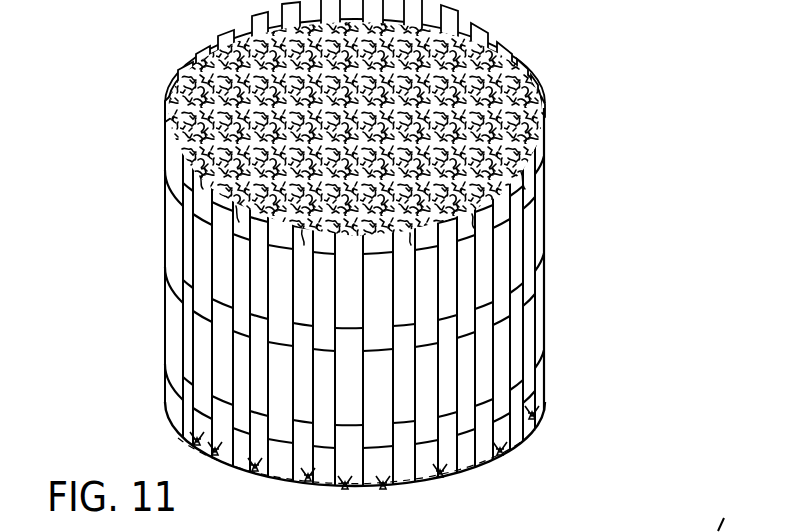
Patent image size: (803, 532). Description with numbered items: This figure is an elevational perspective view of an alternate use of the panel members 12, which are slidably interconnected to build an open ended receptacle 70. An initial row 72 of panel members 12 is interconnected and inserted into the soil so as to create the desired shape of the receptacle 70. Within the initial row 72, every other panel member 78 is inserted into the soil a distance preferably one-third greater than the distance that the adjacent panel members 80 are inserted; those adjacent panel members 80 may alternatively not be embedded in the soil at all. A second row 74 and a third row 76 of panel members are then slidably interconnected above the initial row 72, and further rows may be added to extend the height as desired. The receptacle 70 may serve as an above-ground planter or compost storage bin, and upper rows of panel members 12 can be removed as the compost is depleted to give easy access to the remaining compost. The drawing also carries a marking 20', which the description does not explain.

The panel member 12 is at (203, 259).
The open ended receptacle 70 is at (150, 434).
The initial row of panel members 72 is at (514, 454).
The second row of panel members 74 is at (561, 304).
The third row of panel members 76 is at (560, 223).
The every other panel member of the initial row 78 is at (253, 440).
The adjacent panel member 80 is at (195, 440).
The container 20' is at (742, 517).